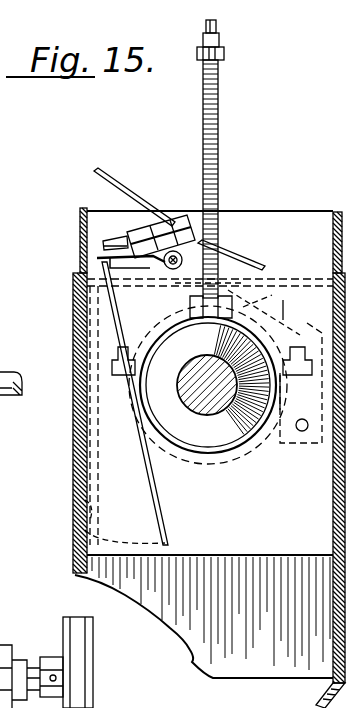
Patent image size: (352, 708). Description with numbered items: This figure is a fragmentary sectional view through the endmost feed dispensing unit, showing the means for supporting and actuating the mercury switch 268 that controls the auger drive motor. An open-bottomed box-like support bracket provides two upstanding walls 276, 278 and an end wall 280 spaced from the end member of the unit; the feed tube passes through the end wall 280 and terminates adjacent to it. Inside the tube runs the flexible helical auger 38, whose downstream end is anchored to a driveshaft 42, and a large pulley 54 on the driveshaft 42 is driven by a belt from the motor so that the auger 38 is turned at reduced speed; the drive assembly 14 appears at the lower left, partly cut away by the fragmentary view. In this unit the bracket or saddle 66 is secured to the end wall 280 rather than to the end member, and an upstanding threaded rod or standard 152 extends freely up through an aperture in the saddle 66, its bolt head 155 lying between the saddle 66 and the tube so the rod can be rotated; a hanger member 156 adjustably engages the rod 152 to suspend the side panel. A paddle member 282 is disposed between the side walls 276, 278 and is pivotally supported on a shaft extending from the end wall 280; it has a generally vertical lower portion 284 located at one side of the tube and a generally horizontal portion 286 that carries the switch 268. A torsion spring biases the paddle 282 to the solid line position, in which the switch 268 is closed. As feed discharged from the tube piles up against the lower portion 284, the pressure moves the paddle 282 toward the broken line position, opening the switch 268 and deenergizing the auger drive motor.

The drive shaft assembly 14 is at (5, 640).
The helical auger 38 is at (246, 413).
The driveshaft 42 is at (208, 407).
The large pulley 54 is at (93, 690).
The bracket or saddle 66 is at (258, 264).
The upstanding threaded rod or standard 152 is at (218, 138).
The bolt head 155 is at (283, 297).
The hanger member 156 is at (108, 172).
The mercury switch 268 is at (178, 222).
The upstanding wall 276 is at (333, 232).
The upstanding wall 278 is at (103, 243).
The end wall 280 is at (243, 218).
The paddle member 282 is at (108, 298).
The upstanding portion 284 is at (80, 483).
The laterally extending portion 286 is at (78, 250).